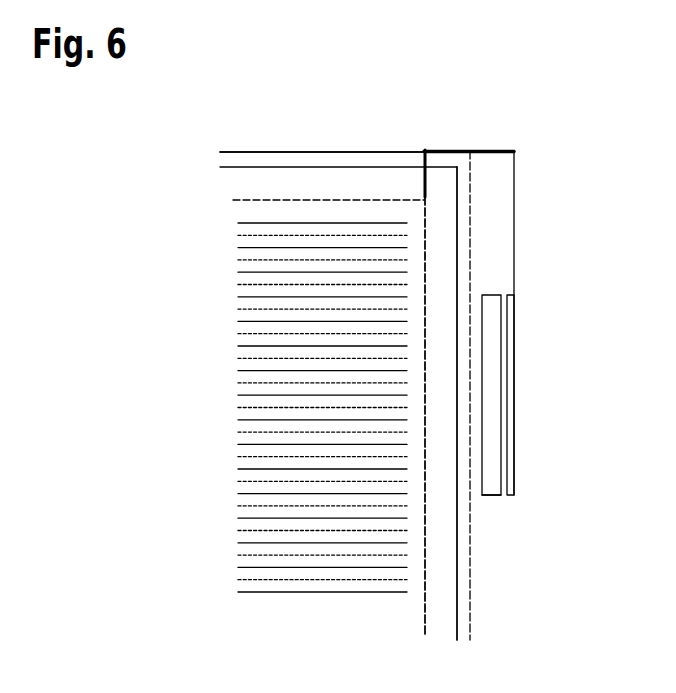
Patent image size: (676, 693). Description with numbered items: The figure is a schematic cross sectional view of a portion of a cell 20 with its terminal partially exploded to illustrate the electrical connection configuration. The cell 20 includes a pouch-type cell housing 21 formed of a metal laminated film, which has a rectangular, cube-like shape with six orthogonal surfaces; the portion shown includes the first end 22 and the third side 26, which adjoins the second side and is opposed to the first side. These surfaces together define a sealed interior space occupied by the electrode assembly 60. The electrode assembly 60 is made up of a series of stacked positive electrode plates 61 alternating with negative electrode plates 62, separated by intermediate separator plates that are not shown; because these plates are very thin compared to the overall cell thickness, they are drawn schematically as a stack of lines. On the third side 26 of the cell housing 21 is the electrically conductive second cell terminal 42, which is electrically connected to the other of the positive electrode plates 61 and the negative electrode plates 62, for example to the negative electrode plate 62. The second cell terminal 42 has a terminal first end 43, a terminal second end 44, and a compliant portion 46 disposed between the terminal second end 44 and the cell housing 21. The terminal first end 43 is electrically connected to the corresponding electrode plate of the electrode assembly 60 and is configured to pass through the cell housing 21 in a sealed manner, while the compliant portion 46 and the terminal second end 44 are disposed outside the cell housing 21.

The cell 20 is at (153, 163).
The cell housing 21 is at (316, 150).
The first end 22 is at (379, 158).
The third side 26 is at (465, 583).
The second cell terminal 42 is at (553, 273).
The terminal first end 43 is at (495, 150).
The terminal second end 44 is at (510, 395).
The compliant portion 46 is at (490, 497).
The electrode assembly 60 is at (422, 615).
The positive electrode plate 61 is at (253, 333).
The negative electrode plate 62 is at (252, 347).